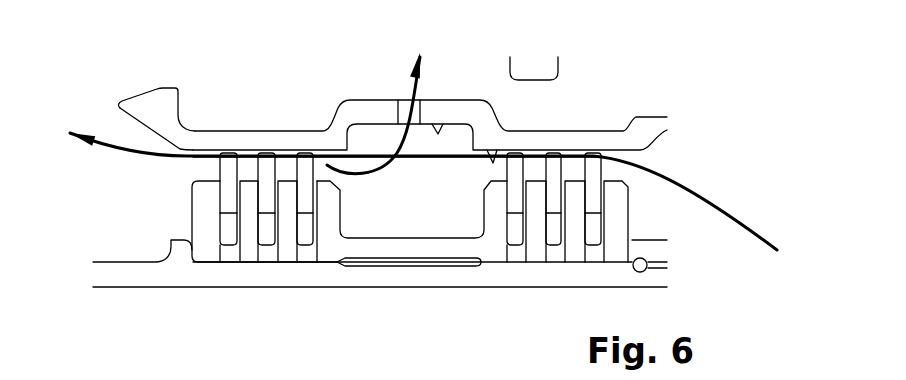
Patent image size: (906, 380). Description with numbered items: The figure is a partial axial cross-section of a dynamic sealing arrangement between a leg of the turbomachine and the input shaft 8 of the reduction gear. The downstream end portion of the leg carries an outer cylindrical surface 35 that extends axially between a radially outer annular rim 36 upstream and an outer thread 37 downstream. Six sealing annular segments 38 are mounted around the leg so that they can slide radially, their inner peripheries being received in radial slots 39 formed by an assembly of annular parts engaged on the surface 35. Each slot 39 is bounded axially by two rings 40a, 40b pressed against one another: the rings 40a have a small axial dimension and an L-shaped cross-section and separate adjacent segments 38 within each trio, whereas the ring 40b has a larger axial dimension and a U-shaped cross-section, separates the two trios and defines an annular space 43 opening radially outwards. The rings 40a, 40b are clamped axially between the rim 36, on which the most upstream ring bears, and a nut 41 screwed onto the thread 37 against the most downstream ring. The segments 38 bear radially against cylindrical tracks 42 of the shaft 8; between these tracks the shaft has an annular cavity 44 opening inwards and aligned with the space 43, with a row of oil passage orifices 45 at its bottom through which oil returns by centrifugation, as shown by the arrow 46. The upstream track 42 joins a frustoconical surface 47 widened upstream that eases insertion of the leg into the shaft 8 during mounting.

The input shaft 8 is at (613, 140).
The outer cylindrical surface 35 is at (302, 255).
The radially outer annular rim 36 is at (180, 248).
The outer thread 37 is at (645, 270).
The sealing annular segments 38 is at (603, 168).
The radial slots 39 is at (590, 230).
The rings 40a is at (615, 220).
The ring 40b is at (328, 255).
The nut 41 is at (650, 248).
The cylindrical tracks 42 is at (497, 150).
The annular space 43 is at (409, 231).
The annular cavity 44 is at (443, 133).
The oil passage orifices 45 is at (398, 110).
The arrow 46 is at (410, 88).
The frustoconical surface 47 is at (143, 132).